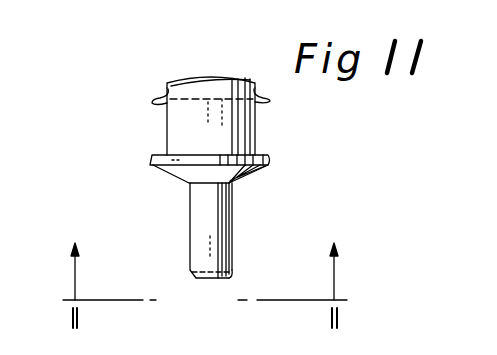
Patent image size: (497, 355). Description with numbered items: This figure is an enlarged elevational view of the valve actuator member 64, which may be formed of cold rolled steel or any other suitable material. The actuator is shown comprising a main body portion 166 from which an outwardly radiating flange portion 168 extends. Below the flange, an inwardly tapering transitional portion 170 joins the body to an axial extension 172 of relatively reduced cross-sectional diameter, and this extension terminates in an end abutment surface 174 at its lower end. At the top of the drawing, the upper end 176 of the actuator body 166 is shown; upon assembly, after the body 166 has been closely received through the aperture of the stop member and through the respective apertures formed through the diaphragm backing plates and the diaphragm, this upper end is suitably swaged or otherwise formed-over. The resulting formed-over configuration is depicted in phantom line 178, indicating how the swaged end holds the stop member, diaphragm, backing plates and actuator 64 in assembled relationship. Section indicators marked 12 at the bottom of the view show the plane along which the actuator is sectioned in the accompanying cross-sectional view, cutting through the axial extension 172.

The valve actuator member 64 is at (162, 181).
The main body portion 166 is at (167, 128).
The outwardly radiating flange portion 168 is at (257, 151).
The inwardly tapering transitional portion 170 is at (181, 173).
The axial extension 172 is at (193, 252).
The end abutment surface 174 is at (212, 282).
The upper end 176 is at (173, 79).
The phantom line 178 is at (152, 103).
The section line 12- 12 is at (359, 266).